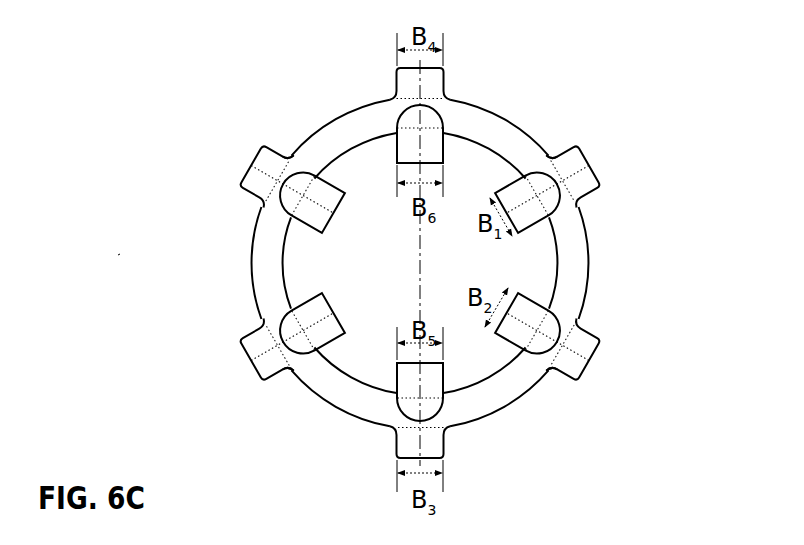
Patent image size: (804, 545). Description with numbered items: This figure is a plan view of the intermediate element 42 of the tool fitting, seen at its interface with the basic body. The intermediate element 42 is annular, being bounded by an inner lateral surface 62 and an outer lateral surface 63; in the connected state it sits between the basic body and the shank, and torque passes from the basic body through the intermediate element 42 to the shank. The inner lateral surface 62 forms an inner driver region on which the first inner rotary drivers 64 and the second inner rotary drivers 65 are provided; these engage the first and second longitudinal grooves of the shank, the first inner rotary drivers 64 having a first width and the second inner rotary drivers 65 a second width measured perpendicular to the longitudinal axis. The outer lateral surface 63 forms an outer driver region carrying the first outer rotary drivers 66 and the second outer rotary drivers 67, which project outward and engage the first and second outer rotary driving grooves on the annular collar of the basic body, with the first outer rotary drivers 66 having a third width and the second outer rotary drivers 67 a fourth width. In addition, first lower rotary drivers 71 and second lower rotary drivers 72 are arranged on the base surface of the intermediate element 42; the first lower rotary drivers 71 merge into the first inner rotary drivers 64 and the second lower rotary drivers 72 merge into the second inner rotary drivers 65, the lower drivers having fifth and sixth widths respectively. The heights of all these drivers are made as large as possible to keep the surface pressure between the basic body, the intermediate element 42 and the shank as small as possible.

The intermediate element 42 is at (122, 254).
The inner lateral surface 62 is at (288, 265).
The outer lateral surface 63 is at (347, 112).
The first inner rotary drivers 64 is at (535, 211).
The second inner rotary drivers 65 is at (522, 338).
The first outer rotary drivers 66 is at (435, 442).
The second outer rotary drivers 67 is at (577, 357).
The first lower rotary drivers 71 is at (550, 155).
The second lower rotary drivers 72 is at (551, 368).